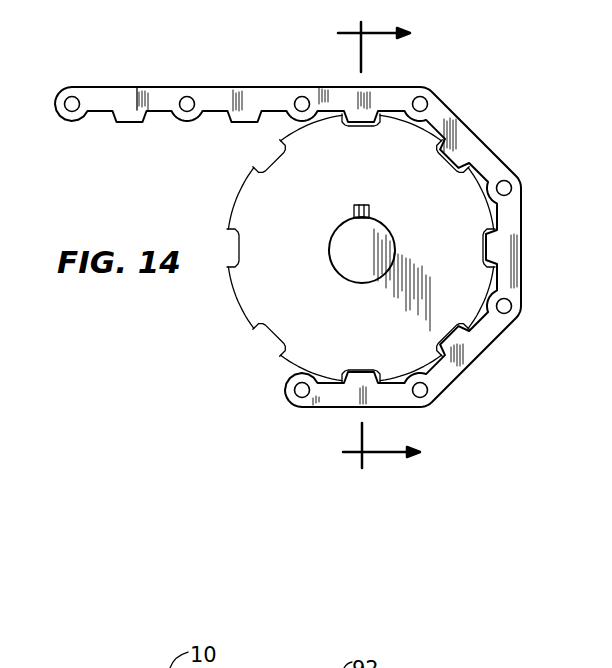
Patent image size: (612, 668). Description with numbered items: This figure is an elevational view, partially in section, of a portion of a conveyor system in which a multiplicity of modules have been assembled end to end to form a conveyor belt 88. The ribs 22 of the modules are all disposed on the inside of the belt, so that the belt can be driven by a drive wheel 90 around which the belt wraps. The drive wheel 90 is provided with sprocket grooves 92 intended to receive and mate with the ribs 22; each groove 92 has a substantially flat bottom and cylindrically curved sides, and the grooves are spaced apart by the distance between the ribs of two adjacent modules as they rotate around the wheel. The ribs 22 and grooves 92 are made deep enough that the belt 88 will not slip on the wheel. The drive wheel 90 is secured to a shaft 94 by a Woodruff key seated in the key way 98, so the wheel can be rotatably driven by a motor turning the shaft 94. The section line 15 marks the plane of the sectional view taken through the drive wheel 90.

The conveyor belt 88 is at (288, 221).
The ribs 22 is at (240, 122).
The drive wheel 90 is at (337, 248).
The sprocket grooves 92 is at (243, 163).
The shaft 94 is at (353, 247).
The key way 98 is at (353, 211).
The section line 15- 15 is at (376, 245).